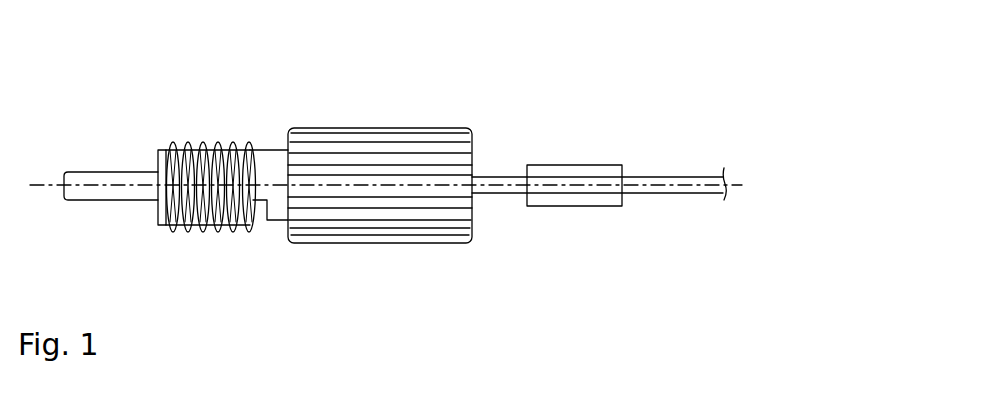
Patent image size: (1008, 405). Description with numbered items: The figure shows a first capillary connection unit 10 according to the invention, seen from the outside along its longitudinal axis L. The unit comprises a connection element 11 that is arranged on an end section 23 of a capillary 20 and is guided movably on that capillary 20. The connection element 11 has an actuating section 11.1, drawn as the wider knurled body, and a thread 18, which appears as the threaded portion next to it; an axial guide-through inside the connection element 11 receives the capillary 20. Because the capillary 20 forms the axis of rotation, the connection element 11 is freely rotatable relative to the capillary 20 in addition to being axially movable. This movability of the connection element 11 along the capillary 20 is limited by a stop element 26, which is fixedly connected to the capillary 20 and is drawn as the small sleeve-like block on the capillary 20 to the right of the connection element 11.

The capillary connection unit 10 is at (562, 83).
The connection element 11 is at (322, 135).
The actuating section 11.1 is at (293, 109).
The thread 18 is at (210, 142).
The capillary 20 is at (661, 178).
The end section 23 is at (472, 255).
The stop element 26 is at (578, 206).
The longitudinal axis L is at (93, 187).